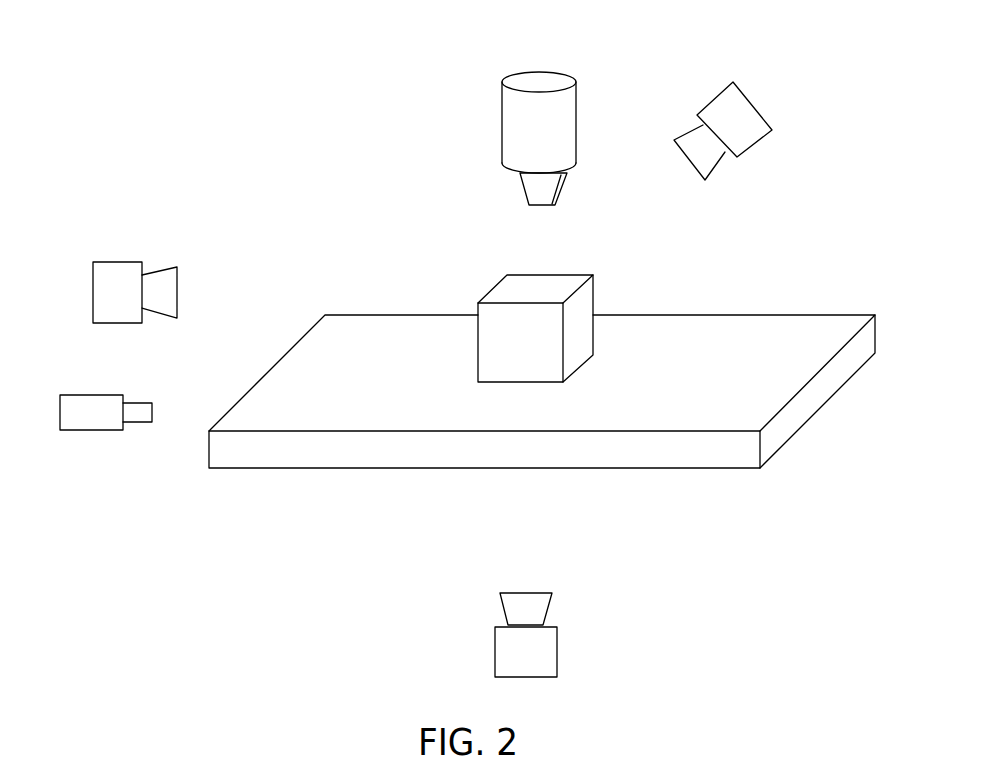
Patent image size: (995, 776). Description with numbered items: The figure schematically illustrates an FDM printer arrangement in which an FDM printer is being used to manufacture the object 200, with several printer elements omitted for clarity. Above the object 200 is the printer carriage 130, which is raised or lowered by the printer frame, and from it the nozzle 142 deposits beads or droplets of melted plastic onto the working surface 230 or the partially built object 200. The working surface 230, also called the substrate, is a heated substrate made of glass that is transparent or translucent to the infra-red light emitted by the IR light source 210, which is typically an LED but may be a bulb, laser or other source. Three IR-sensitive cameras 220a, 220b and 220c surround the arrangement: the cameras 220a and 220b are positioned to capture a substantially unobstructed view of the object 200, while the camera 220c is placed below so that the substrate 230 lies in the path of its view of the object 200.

The printer carriage 130 is at (563, 72).
The nozzle 142 is at (522, 195).
The object 200 is at (597, 290).
The IR light source 210 is at (72, 430).
The camera 220a is at (108, 261).
The camera 220b is at (760, 110).
The camera 220c is at (557, 660).
The working surface 230 is at (848, 382).